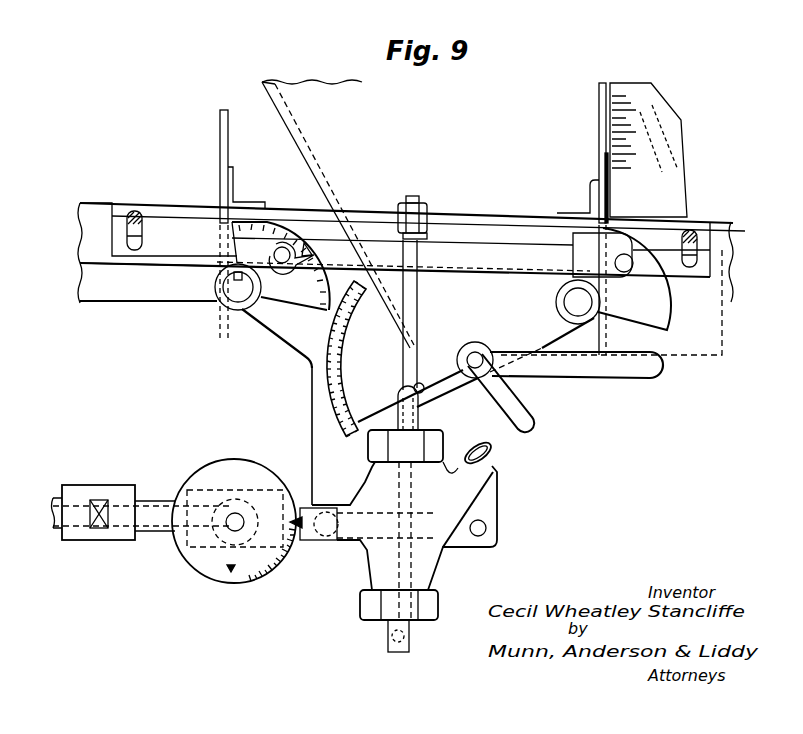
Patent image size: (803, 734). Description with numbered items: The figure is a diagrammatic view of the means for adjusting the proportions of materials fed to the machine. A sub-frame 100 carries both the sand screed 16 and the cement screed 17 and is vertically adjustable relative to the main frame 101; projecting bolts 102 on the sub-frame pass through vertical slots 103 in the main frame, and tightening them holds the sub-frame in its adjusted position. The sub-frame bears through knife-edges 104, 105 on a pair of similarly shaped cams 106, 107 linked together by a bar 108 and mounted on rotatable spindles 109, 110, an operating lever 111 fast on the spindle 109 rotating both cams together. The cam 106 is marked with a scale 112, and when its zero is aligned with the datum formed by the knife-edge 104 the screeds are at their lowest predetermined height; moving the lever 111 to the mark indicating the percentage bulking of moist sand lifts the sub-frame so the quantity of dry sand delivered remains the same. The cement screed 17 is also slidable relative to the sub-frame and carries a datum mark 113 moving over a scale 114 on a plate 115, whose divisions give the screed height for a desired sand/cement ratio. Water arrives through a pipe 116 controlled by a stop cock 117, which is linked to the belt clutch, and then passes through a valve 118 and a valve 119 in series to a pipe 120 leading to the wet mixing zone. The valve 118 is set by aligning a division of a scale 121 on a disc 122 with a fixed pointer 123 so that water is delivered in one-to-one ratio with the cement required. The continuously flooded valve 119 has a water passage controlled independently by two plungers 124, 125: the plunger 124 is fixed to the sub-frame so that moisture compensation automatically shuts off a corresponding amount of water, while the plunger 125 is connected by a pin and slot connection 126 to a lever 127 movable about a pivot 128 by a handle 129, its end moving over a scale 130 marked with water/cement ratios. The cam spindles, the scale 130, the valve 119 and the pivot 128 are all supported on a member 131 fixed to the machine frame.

The sand screed 16 is at (225, 181).
The cement screed 17 is at (605, 177).
The sub-frame 100 is at (290, 206).
The main frame 101 is at (97, 202).
The projecting bolts 102 is at (133, 210).
The vertical slots 103 is at (133, 248).
The knife-edge 104 is at (241, 214).
The knife-edge 105 is at (578, 225).
The cam 106 is at (287, 293).
The cam 107 is at (637, 302).
The bar 108 is at (475, 257).
The rotatable spindle 109 is at (242, 289).
The rotatable spindle 110 is at (570, 302).
The operating lever 111 is at (162, 290).
The scale 112 is at (312, 250).
The datum mark 113 is at (608, 206).
The scale 114 is at (618, 130).
The plate 115 is at (675, 178).
The pipe 116 is at (63, 500).
The stop cock 117 is at (100, 494).
The valve 118 is at (234, 523).
The valve 119 is at (403, 522).
The pipe 120 is at (492, 461).
The scale 121 is at (268, 572).
The disc 122 is at (194, 558).
The fixed pointer 123 is at (307, 533).
The plunger 124 is at (418, 298).
The plunger 125 is at (414, 418).
The pin and slot connection 126 is at (421, 391).
The lever 127 is at (447, 374).
The pivot 128 is at (476, 350).
The handle 129 is at (575, 368).
The scale 130 is at (332, 390).
The member 131 is at (325, 468).